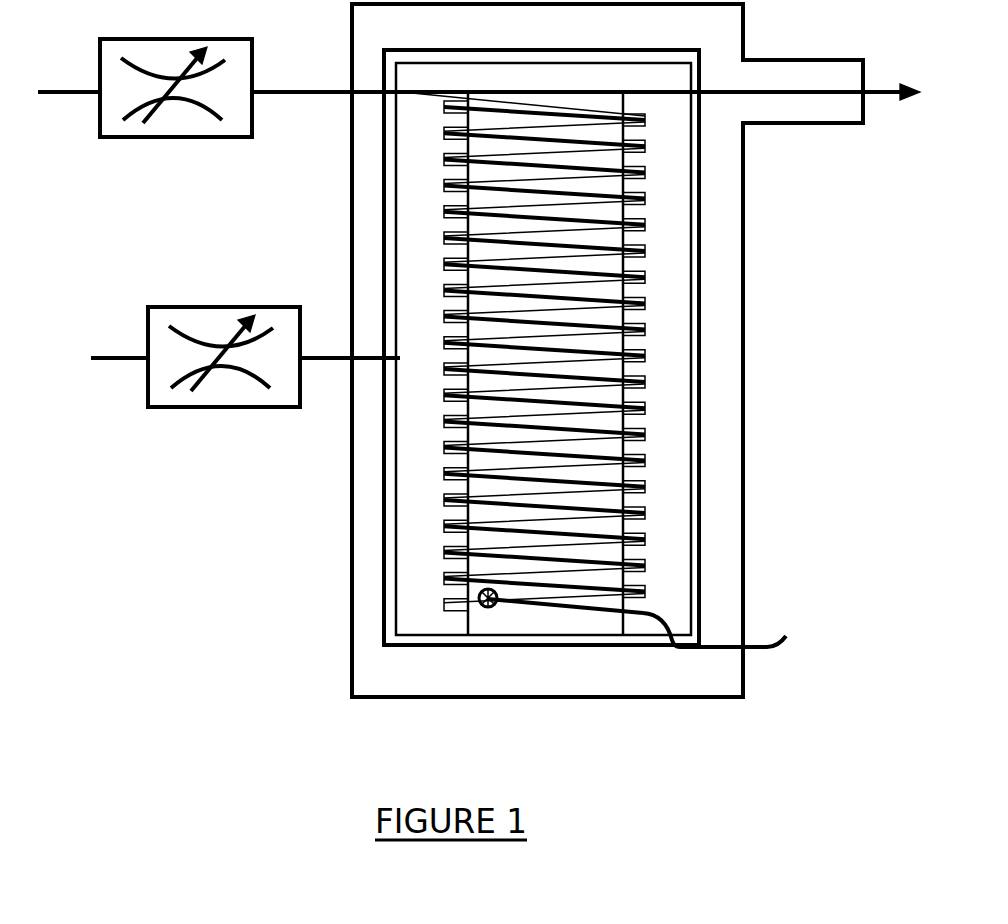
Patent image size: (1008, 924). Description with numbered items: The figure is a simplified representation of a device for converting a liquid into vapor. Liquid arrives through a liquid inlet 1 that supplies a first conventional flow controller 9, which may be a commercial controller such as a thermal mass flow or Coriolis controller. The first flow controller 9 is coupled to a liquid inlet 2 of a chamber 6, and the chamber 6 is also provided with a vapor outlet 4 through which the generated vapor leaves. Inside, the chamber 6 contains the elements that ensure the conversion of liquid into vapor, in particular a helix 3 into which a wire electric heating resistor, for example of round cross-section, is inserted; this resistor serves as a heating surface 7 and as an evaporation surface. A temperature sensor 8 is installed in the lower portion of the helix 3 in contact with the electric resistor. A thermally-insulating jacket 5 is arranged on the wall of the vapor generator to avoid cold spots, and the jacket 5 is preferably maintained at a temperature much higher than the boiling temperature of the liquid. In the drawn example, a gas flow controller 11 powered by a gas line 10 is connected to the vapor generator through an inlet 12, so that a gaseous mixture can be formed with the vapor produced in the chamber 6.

The liquid inlet 1 is at (82, 94).
The liquid inlet 2 is at (330, 94).
The helix 3 is at (638, 120).
The vapor outlet 4 is at (873, 95).
The thermally-insulating jacket 5 is at (728, 332).
The chamber 6 is at (698, 445).
The heating surface 7 is at (765, 650).
The temperature sensor 8 is at (488, 608).
The first flow controller 9 is at (157, 138).
The gas line 10 is at (130, 360).
The gas flow controller 11 is at (203, 408).
The inlet 12 is at (337, 360).